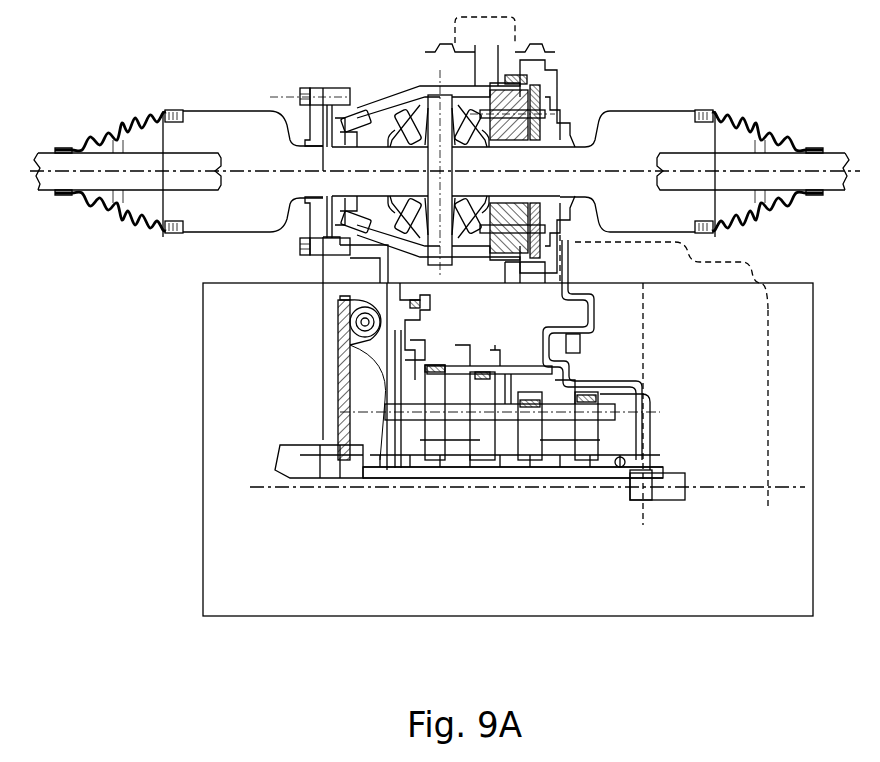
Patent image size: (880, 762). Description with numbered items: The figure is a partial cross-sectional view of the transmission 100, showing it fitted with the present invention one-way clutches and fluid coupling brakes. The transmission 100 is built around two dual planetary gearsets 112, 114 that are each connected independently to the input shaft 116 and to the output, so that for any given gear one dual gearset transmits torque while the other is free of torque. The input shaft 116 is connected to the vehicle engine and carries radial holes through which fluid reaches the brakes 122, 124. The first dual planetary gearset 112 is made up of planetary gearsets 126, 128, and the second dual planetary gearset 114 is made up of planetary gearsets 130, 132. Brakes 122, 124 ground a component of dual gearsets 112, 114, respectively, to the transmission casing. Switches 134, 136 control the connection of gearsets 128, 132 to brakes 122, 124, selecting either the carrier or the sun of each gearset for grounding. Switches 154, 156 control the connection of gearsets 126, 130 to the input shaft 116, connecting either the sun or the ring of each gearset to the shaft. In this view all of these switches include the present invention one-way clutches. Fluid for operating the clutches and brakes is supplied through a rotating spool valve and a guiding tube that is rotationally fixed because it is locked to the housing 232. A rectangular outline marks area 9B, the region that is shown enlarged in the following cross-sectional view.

The transmission 100 is at (716, 281).
The dual planetary gearset 112 is at (463, 304).
The dual planetary gearset 114 is at (527, 314).
The input shaft 116 is at (390, 479).
The brake 122 is at (420, 300).
The brake 124 is at (562, 320).
The planetary gearset 126 is at (486, 382).
The planetary gearset 128 is at (437, 374).
The planetary gearset 130 is at (528, 396).
The planetary gearset 132 is at (588, 397).
The switch 134 is at (377, 380).
The switch 136 is at (612, 377).
The switch 154 is at (456, 481).
The switch 156 is at (563, 480).
The housing 232 is at (333, 243).
The area 9B is at (204, 431).